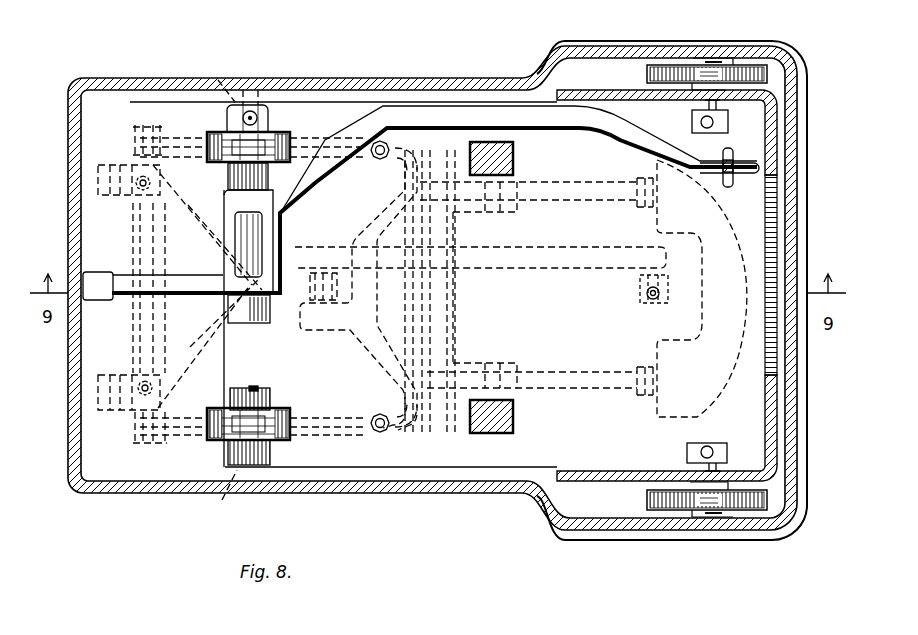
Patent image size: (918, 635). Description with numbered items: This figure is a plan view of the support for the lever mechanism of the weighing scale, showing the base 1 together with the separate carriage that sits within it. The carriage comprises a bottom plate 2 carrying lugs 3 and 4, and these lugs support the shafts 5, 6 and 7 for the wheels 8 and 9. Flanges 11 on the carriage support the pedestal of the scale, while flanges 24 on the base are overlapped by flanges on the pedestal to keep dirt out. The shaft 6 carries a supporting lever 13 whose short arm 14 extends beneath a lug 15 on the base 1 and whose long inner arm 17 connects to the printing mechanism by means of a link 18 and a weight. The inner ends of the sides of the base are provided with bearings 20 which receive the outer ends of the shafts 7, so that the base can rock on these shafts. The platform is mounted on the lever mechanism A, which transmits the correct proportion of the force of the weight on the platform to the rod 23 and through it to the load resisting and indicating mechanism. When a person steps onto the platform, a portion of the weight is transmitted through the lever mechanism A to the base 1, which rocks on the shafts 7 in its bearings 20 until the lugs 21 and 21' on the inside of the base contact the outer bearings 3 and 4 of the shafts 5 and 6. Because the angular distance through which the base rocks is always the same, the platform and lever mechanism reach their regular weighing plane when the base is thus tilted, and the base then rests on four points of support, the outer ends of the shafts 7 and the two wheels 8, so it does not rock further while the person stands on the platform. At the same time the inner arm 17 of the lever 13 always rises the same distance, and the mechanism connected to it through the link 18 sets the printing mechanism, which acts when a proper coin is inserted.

The base 1 is at (296, 80).
The bottom plate 2 is at (343, 284).
The lug 3 is at (270, 178).
The lug 4 is at (270, 118).
The shaft 5 is at (256, 388).
The shaft 6 is at (255, 233).
The shaft 7 is at (716, 106).
The wheel 8 is at (283, 147).
The wheel 9 is at (647, 72).
The flange 11 is at (633, 115).
The supporting lever 13 is at (272, 258).
The short arm 14 is at (177, 297).
The lug 15 is at (103, 300).
The long inner arm 17 is at (545, 122).
The link 18 is at (730, 187).
The bearing 20 is at (740, 56).
The lug 21 is at (214, 81).
The lug 21' is at (217, 495).
The rod 23 is at (645, 305).
The flange 24 is at (748, 527).
The lever mechanism A is at (460, 315).